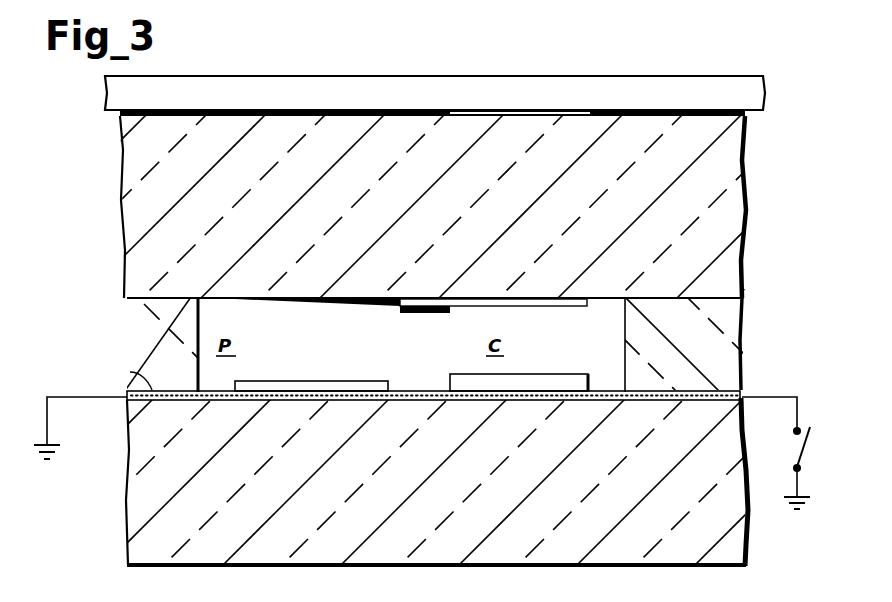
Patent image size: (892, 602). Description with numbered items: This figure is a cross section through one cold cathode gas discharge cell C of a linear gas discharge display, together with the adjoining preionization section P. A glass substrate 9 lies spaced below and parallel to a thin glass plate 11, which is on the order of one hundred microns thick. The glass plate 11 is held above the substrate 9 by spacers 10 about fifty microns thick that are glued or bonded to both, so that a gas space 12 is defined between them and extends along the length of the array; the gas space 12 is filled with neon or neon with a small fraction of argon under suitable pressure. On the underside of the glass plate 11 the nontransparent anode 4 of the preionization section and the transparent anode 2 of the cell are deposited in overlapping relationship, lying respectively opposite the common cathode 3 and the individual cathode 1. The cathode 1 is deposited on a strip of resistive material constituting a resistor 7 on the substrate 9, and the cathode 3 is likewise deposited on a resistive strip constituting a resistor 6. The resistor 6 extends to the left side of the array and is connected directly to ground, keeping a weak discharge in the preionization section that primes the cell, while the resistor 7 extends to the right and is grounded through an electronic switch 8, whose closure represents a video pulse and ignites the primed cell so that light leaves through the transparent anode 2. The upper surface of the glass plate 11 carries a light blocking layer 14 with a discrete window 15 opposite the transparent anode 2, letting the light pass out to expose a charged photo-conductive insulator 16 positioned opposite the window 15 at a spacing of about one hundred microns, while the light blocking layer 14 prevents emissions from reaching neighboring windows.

The cathode 1 is at (555, 388).
The transparent anode 2 is at (565, 306).
The cathode 3 is at (307, 388).
The nontransparent anode 4 is at (320, 307).
The resistor 6 is at (130, 372).
The resistor 7 is at (740, 380).
The electronic switch 8 is at (808, 448).
The glass substrate 9 is at (135, 503).
The spacer 10 is at (815, 313).
The thin glass plate 11 is at (128, 233).
The gas space 12 is at (637, 243).
The light blocking layer 14 is at (342, 110).
The window 15 is at (528, 110).
The charged photo-conductive insulator 16 is at (703, 98).